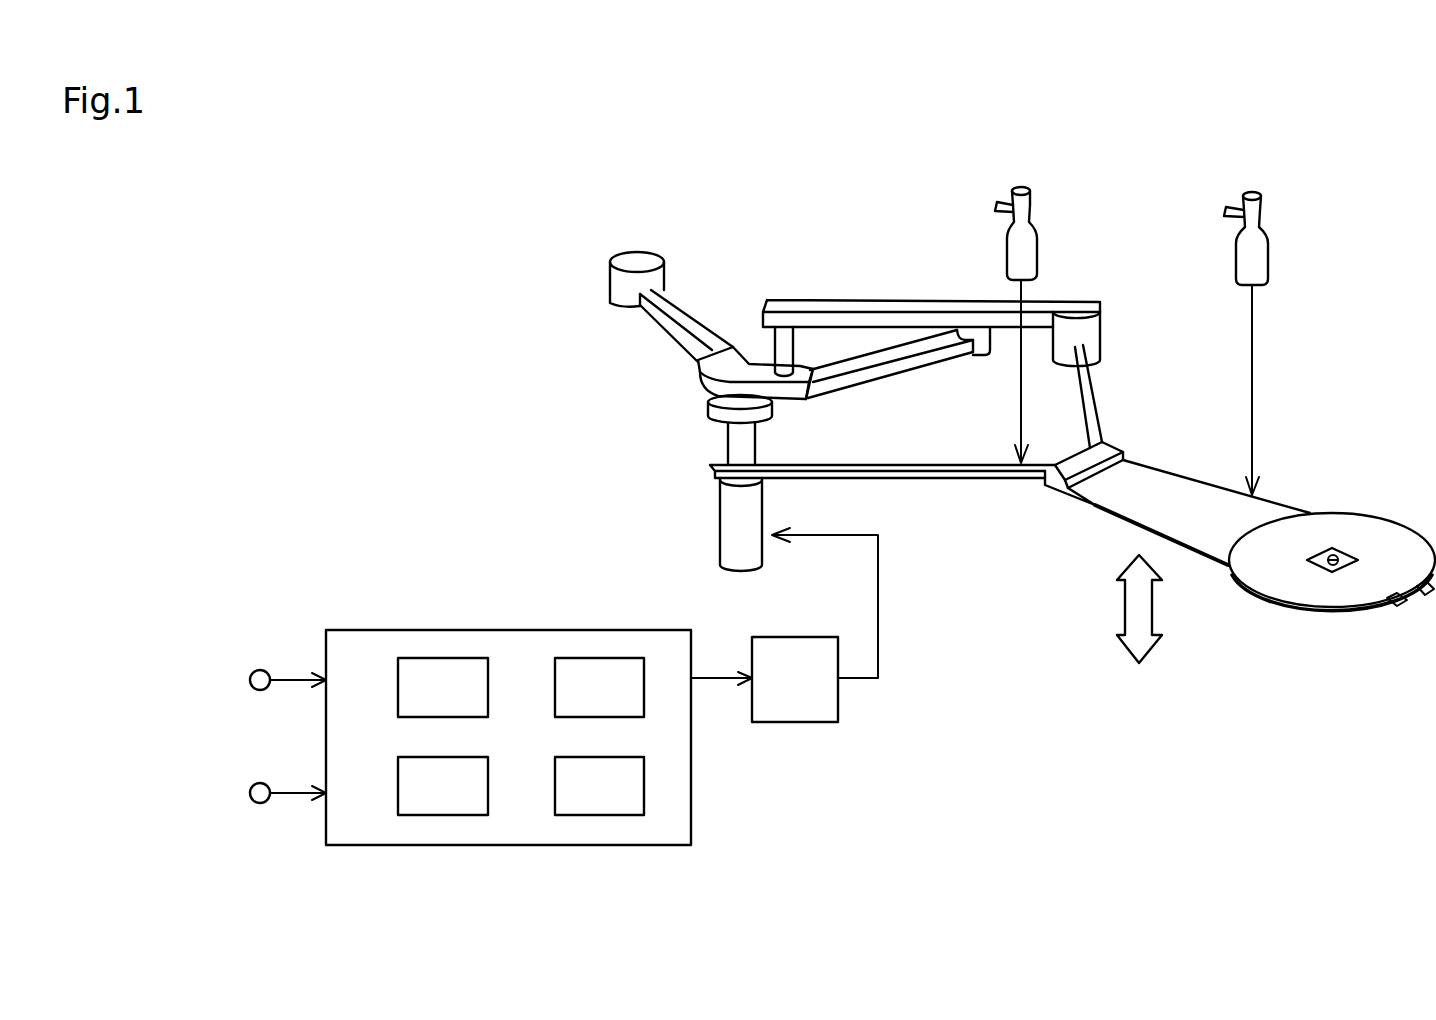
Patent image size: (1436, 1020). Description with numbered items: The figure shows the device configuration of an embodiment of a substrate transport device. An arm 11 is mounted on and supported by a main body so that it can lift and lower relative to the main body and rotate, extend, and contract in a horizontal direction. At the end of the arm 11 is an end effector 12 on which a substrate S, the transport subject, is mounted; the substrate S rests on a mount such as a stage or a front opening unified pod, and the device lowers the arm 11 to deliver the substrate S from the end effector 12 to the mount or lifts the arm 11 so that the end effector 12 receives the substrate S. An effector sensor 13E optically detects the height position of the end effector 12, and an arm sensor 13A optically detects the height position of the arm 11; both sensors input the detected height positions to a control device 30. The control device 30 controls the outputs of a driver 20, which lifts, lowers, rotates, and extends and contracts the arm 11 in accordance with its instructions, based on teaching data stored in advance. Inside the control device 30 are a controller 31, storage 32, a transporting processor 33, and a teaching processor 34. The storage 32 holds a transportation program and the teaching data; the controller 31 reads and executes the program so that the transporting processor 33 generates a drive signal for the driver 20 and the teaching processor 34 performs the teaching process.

The arm 11 is at (928, 300).
The end effector 12 is at (1333, 610).
The arm sensor 13A is at (1033, 210).
The effector sensor 13E is at (1263, 208).
The driver 20 is at (807, 635).
The control device 30 is at (537, 628).
The controller 31 is at (397, 687).
The storage 32 is at (397, 789).
The transporting processor 33 is at (553, 687).
The teaching processor 34 is at (553, 789).
The substrate S is at (1394, 530).